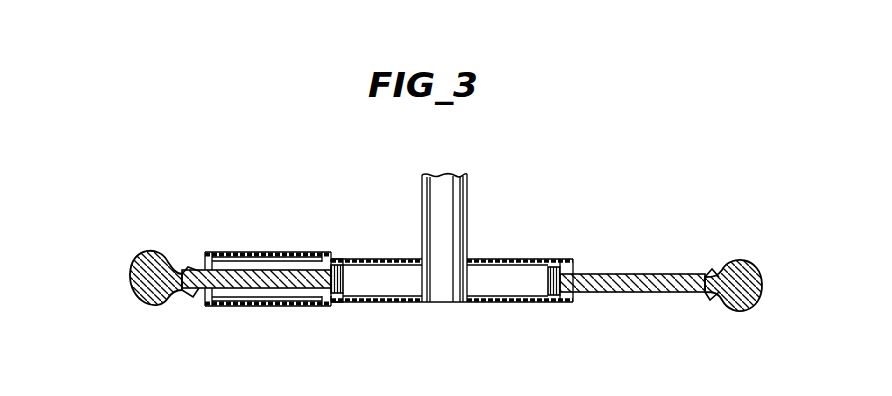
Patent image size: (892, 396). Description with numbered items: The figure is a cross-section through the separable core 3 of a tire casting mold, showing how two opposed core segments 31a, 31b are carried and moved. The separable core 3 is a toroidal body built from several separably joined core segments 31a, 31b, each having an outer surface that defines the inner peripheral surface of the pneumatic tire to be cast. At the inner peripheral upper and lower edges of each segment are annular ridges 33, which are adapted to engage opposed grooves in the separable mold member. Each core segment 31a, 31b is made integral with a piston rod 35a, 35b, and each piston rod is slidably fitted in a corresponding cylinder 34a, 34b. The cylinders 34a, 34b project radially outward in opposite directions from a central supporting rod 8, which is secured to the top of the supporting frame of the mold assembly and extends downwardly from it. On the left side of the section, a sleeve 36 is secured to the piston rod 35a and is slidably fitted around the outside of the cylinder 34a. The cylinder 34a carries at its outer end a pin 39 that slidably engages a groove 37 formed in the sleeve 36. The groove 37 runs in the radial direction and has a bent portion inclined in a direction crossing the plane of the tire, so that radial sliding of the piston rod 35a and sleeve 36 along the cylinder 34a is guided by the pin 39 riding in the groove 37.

The separable core 3 is at (149, 248).
The supporting rod 8 is at (455, 236).
The core segment 31a is at (157, 304).
The core segment 31b is at (737, 311).
The annular ridge 33 is at (196, 267).
The cylinder 34a is at (378, 303).
The cylinder 34b is at (495, 303).
The piston rod 35a is at (200, 289).
The piston rod 35b is at (636, 293).
The sleeve 36 is at (305, 306).
The groove 37 is at (293, 252).
The pin 39 is at (323, 256).